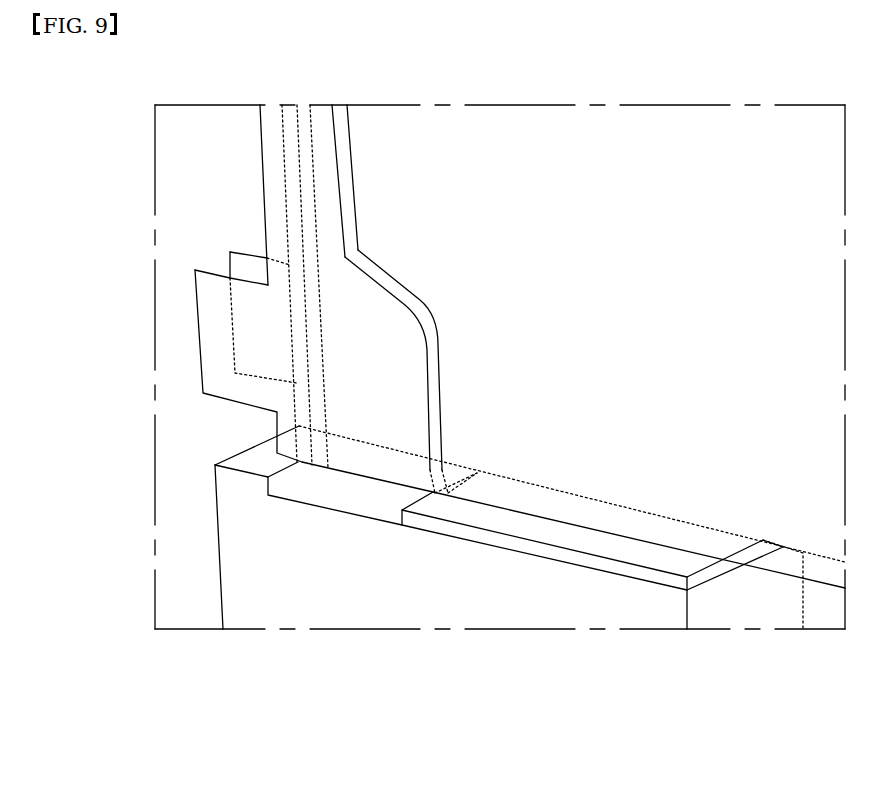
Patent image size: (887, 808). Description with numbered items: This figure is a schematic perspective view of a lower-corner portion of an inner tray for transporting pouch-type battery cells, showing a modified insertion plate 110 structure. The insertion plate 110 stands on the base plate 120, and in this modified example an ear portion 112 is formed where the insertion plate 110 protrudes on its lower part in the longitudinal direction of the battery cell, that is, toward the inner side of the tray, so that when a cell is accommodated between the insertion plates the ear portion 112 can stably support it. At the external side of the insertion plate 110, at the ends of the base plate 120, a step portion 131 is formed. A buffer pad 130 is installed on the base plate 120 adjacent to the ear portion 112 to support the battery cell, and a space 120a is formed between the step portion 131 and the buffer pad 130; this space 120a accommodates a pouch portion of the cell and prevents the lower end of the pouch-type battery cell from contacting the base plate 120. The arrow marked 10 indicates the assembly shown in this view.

The stepped mounting member 10 is at (183, 330).
The insertion plate 110 is at (352, 213).
The ear portion 112 is at (400, 358).
The base plate 120 is at (408, 600).
The space 120a is at (367, 495).
The buffer pad 130 is at (553, 535).
The step portion 131 is at (288, 477).